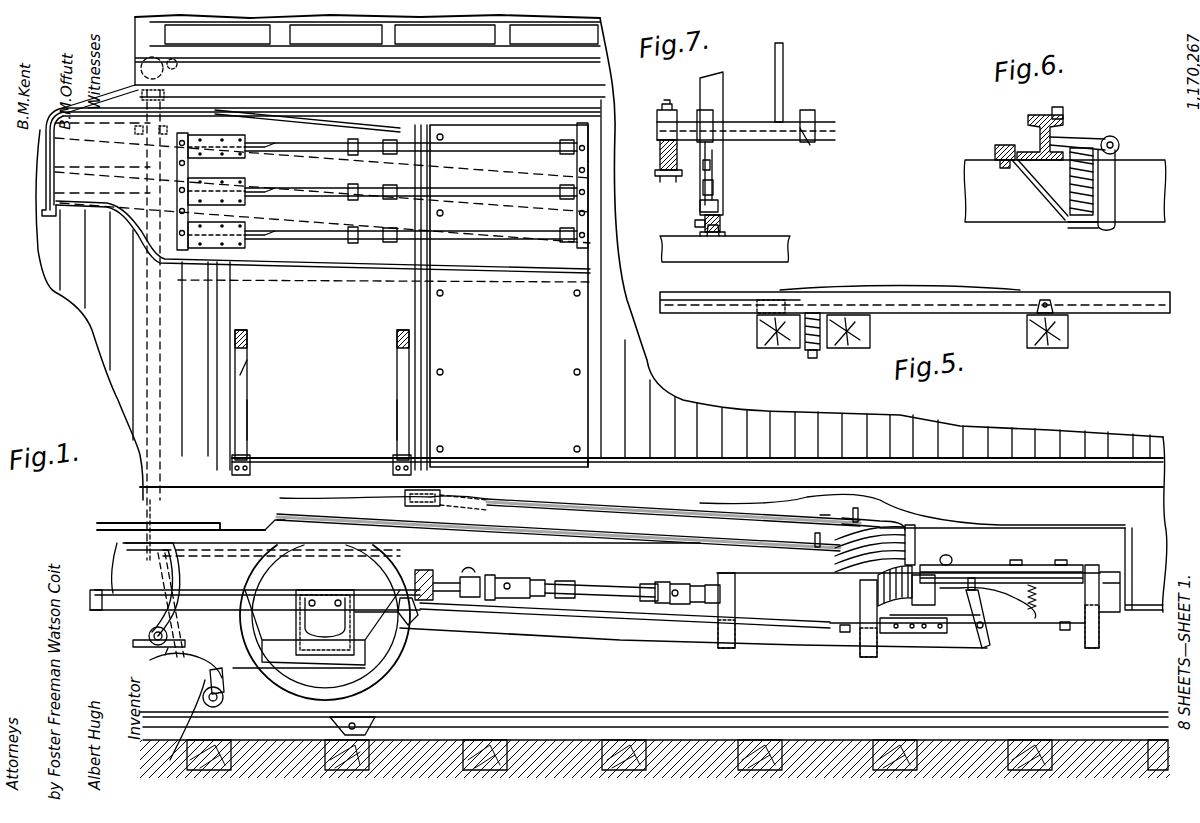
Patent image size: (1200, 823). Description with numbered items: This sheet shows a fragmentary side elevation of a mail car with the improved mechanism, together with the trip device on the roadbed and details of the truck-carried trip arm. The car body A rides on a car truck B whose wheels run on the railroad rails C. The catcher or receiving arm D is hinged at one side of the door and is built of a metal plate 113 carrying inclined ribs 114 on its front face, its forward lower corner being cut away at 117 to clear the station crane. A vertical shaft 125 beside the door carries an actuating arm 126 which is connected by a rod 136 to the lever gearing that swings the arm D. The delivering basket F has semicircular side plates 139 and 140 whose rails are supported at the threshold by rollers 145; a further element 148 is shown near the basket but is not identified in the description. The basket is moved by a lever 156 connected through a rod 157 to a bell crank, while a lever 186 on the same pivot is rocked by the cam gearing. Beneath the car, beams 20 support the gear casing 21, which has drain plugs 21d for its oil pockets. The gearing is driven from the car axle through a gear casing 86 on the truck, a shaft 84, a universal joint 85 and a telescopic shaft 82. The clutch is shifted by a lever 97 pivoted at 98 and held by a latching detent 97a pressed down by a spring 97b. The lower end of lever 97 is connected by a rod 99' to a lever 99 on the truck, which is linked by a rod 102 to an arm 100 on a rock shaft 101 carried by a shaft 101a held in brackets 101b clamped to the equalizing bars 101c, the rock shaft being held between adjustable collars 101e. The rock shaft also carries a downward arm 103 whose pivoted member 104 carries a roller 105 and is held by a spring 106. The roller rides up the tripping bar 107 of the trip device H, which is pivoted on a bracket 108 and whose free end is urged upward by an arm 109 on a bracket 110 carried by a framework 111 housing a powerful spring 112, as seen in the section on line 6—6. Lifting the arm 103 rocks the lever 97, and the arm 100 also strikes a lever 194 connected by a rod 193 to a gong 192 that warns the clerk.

In FIG. 1, the gong 192 is at (180, 66).
In FIG. 1, the rod 193 is at (145, 362).
In FIG. 1, the lever 194 is at (160, 528).
In FIG. 1, the metal plate 113 is at (70, 180).
In FIG. 1, the ribs 114 is at (175, 165).
In FIG. 1, the cut-away corner 117 is at (93, 220).
In FIG. 1, the vertical shaft 125 is at (420, 327).
In FIG. 1, the actuating arm 126 is at (405, 498).
In FIG. 1, the rod 136 is at (512, 500).
In FIG. 1, the side plate 139 is at (248, 340).
In FIG. 1, the side plate 140 is at (396, 343).
In FIG. 1, the rollers 145 is at (400, 455).
In FIG. 1, the post bar 148 is at (385, 415).
In FIG. 1, the lever 156 is at (870, 573).
In FIG. 1, the rod 157 is at (810, 532).
In FIG. 1, the lever 186 is at (548, 530).
In FIG. 1, the telescopic shaft 82 is at (590, 590).
In FIG. 1, the shaft 84 is at (478, 575).
In FIG. 1, the universal joint 85 is at (660, 568).
In FIG. 1, the gear casing 86 is at (440, 570).
In FIG. 1, the lever 97 is at (990, 617).
In FIG. 1, the latching lever 97a is at (1000, 590).
In FIG. 1, the spring 97b is at (1040, 597).
In FIG. 1, the pivot 98 is at (987, 635).
In FIG. 1, the lever 99 is at (403, 628).
In FIG. 1, the rod 99' is at (693, 645).
In FIG. 1, the beams 20 is at (1100, 637).
In FIG. 1, the gear casing 21 is at (772, 618).
In FIG. 1, the drain plugs 21d is at (1065, 632).
In FIG. 1, the arm 100 is at (182, 625).
In FIG. 7, the arm 100 is at (783, 95).
In FIG. 1, the rock shaft 101 is at (150, 632).
In FIG. 7, the rock shaft 101 is at (760, 142).
In FIG. 7, the shaft 101a is at (815, 150).
In FIG. 7, the brackets 101b is at (660, 112).
In FIG. 7, the equalizing bars 101c is at (660, 152).
In FIG. 7, the collars 101e is at (812, 100).
In FIG. 1, the rod 102 is at (205, 560).
In FIG. 1, the arm 103 is at (200, 668).
In FIG. 7, the arm 103 is at (710, 145).
In FIG. 1, the member 104 is at (225, 700).
In FIG. 7, the member 104 is at (713, 185).
In FIG. 1, the roller 105 is at (170, 762).
In FIG. 7, the roller 105 is at (700, 206).
In FIG. 1, the spring 106 is at (210, 680).
In FIG. 1, the tripping bar 107 is at (265, 740).
In FIG. 7, the tripping bar 107 is at (695, 222).
In FIG. 6, the tripping bar 107 is at (1063, 125).
In FIG. 1, the bracket 108 is at (400, 705).
In FIG. 7, the bracket 108 is at (715, 236).
In FIG. 5, the bracket 108 is at (1050, 300).
In FIG. 6, the arm 109 is at (1118, 138).
In FIG. 6, the bracket 110 is at (1112, 215).
In FIG. 6, the frame-work 111 is at (1040, 198).
In FIG. 5, the frame-work 111 is at (790, 348).
In FIG. 6, the spring 112 is at (1093, 173).
In FIG. 5, the spring 112 is at (835, 348).
In FIG. 5, the section line 6 is at (812, 365).
In FIG. 1, the car body A is at (658, 395).
In FIG. 1, the car truck B is at (400, 655).
In FIG. 1, the railroad rails C is at (580, 722).
In FIG. 6, the railroad rails C is at (1030, 132).
In FIG. 1, the catcher arm D is at (140, 213).
In FIG. 1, the delivering basket F is at (250, 365).
In FIG. 5, the trip device H is at (920, 292).